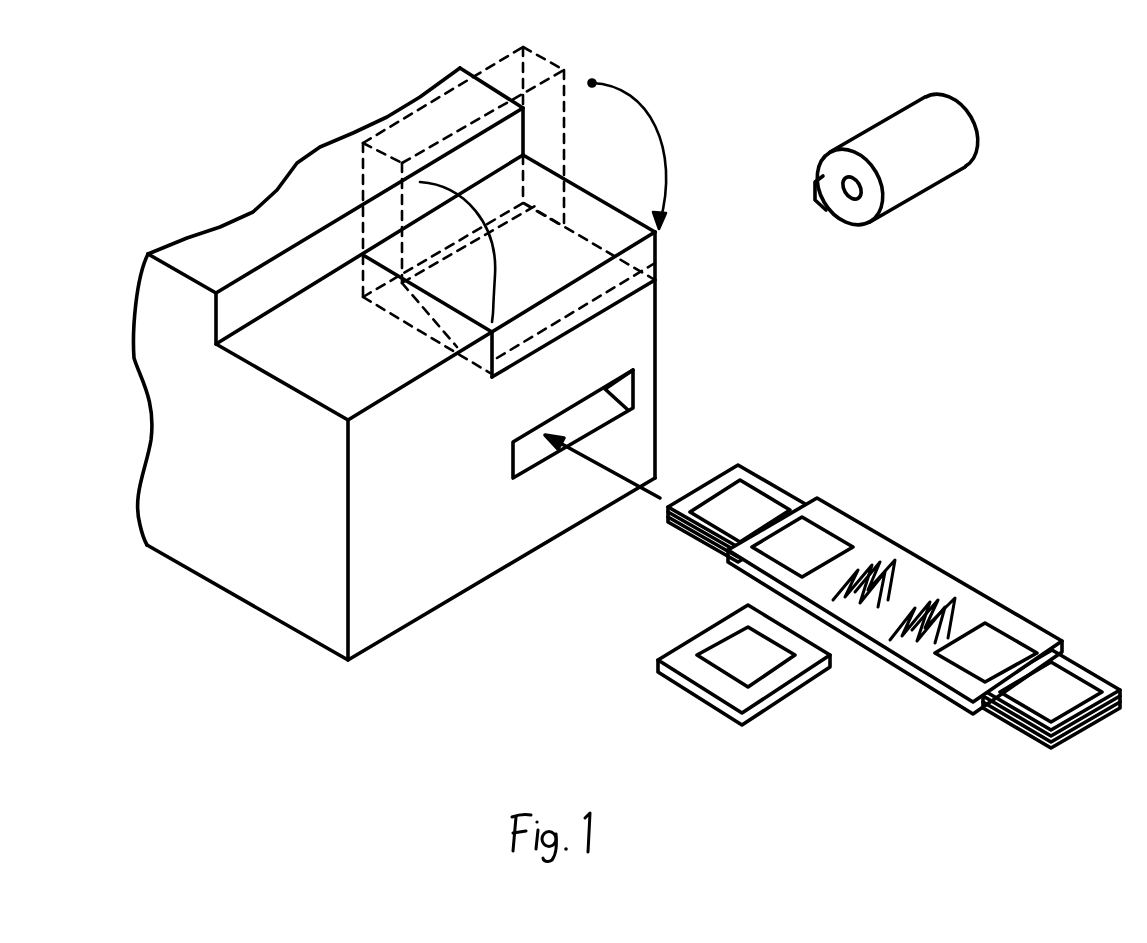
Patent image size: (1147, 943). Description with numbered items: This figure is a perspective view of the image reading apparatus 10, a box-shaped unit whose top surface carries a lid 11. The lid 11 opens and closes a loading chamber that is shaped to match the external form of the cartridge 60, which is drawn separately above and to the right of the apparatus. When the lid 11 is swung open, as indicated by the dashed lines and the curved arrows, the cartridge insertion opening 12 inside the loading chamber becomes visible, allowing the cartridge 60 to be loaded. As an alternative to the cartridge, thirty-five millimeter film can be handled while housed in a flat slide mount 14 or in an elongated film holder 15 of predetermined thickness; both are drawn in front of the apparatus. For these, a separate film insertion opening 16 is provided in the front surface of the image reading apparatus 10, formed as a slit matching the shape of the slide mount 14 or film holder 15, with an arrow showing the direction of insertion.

The image reading apparatus 10 is at (252, 609).
The lid 11 is at (658, 263).
The cartridge insertion opening 12 is at (598, 326).
The slide mount 14 is at (728, 683).
The film holder 15 is at (975, 608).
The film insertion opening 16 is at (658, 432).
The cartridge 60 is at (947, 160).